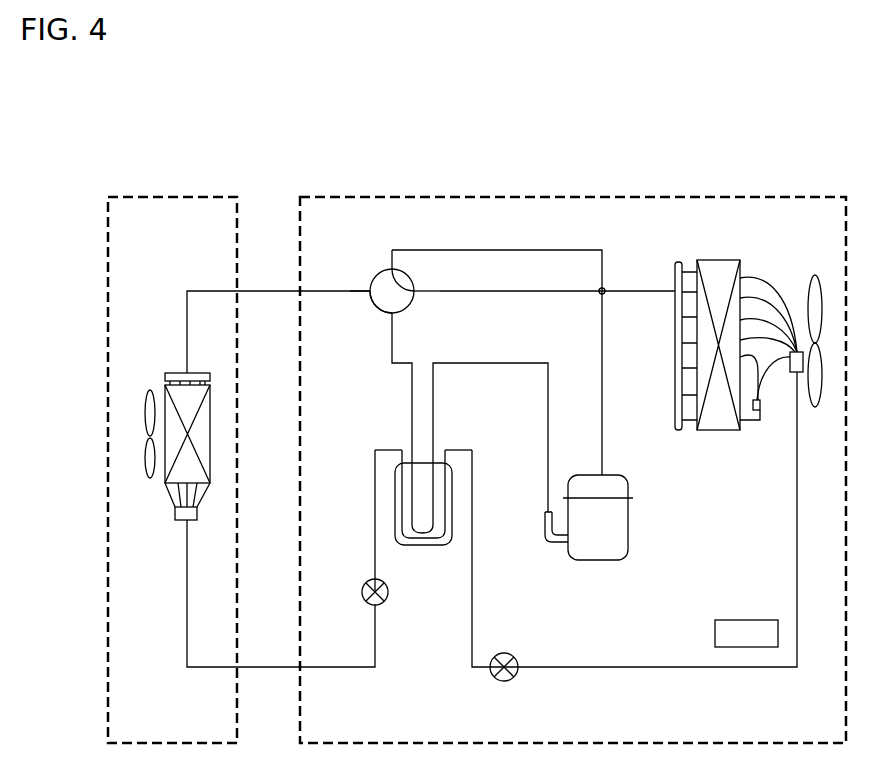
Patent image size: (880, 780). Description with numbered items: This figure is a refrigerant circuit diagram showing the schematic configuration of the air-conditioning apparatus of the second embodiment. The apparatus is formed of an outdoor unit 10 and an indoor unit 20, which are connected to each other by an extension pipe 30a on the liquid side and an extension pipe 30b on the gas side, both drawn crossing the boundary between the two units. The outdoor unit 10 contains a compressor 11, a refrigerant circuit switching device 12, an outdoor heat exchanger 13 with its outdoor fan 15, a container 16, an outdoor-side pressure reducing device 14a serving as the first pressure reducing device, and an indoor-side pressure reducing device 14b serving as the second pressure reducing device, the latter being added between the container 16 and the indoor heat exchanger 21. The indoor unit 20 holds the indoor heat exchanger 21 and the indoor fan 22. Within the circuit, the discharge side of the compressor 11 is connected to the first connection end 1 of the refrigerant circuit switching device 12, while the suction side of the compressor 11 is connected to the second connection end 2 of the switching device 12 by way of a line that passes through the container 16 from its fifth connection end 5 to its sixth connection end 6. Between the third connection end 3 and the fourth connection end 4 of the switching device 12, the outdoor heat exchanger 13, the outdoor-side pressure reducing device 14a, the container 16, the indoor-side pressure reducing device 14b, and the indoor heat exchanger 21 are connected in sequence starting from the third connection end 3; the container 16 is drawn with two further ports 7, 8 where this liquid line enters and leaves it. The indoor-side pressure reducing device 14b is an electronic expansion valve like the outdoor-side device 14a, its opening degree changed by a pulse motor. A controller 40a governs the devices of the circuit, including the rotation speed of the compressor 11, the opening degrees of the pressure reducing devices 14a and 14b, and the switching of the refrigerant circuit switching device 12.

The outdoor unit 10 is at (596, 196).
The indoor unit 20 is at (190, 196).
The compressor 11 is at (630, 522).
The refrigerant circuit switching device 12 is at (374, 281).
The outdoor heat exchanger 13 is at (722, 260).
The outdoor-side pressure reducing device 14a is at (512, 656).
The indoor-side pressure reducing device 14b is at (368, 583).
The outdoor fan 15 is at (818, 407).
The container 16 is at (428, 546).
The indoor heat exchanger 21 is at (170, 372).
The indoor fan 22 is at (147, 480).
The extension pipe on liquid side 30a is at (262, 666).
The extension pipe on gas side 30b is at (272, 290).
The controller 40a is at (746, 647).
The first connection end 1 is at (391, 268).
The second connection end 2 is at (394, 318).
The third connection end 3 is at (428, 291).
The fourth connection end 4 is at (358, 292).
The fifth connection end 5 is at (436, 408).
The sixth connection end 6 is at (410, 406).
The pipe port 7 is at (450, 448).
The pipe port 8 is at (402, 448).